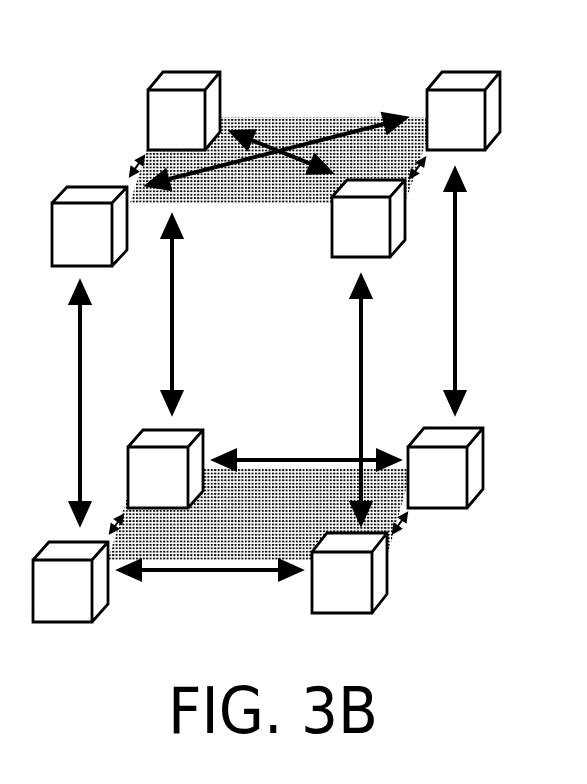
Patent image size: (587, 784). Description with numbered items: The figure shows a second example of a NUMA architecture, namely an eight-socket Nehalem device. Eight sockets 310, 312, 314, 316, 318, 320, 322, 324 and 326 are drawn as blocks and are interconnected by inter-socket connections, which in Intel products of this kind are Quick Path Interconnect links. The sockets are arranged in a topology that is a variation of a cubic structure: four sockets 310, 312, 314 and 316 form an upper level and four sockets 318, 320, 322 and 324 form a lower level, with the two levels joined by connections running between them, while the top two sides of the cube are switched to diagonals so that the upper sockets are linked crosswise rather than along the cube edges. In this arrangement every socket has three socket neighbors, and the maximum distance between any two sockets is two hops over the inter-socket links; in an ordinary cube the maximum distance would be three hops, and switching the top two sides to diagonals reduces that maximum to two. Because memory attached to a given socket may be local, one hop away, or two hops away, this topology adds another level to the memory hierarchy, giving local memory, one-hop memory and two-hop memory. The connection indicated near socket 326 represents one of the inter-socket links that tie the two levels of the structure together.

The socket 310 is at (190, 72).
The socket 312 is at (477, 72).
The socket 314 is at (86, 187).
The socket 316 is at (332, 225).
The socket 318 is at (181, 430).
The socket 320 is at (474, 428).
The socket 322 is at (60, 622).
The socket 324 is at (342, 613).
The socket 326 is at (378, 372).